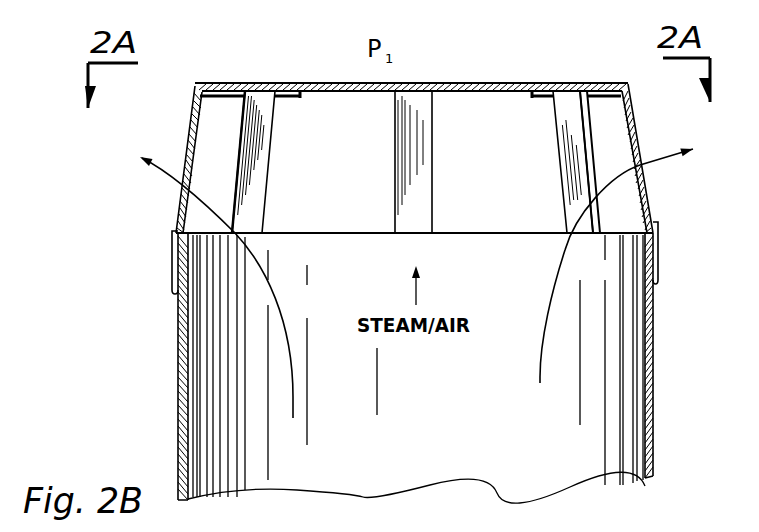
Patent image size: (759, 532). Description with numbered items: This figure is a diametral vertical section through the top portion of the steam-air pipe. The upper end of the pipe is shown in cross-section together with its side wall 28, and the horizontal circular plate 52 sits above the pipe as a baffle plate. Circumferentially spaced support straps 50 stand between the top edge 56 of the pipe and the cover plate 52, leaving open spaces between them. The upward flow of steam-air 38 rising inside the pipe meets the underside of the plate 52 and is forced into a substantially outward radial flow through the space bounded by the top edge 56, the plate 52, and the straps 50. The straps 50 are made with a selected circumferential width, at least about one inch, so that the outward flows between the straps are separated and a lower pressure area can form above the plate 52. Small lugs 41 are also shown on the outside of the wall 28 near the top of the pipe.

The shroud wall 28 is at (180, 378).
The steam-air flow 38 is at (163, 170).
The lug 41 is at (178, 295).
The support straps 50 is at (405, 148).
The circular plate 52 is at (485, 83).
The top edge of the pipe 56 is at (340, 233).